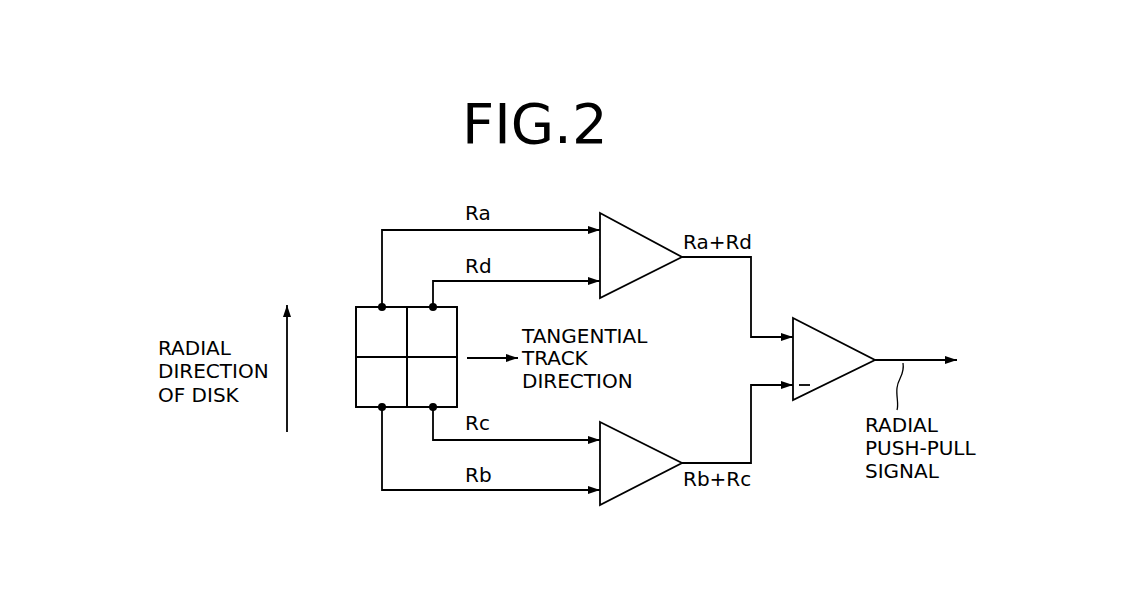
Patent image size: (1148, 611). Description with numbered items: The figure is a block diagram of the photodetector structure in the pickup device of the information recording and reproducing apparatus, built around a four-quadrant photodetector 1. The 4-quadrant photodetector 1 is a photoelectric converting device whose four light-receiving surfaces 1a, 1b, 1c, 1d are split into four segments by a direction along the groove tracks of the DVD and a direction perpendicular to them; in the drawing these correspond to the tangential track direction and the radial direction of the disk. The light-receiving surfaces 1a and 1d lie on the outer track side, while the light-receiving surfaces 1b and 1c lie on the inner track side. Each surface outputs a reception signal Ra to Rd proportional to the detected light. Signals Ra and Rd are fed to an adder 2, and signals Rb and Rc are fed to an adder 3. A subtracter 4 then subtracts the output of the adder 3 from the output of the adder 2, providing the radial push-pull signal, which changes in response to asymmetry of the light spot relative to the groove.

The 4-quadrant photodetector 1 is at (353, 357).
The light-receiving surface 1a is at (377, 313).
The light-receiving surface 1b is at (370, 400).
The light-receiving surface 1c is at (423, 400).
The light-receiving surface 1d is at (428, 315).
The adder 2 is at (642, 233).
The adder 3 is at (645, 440).
The subtracter 4 is at (834, 338).